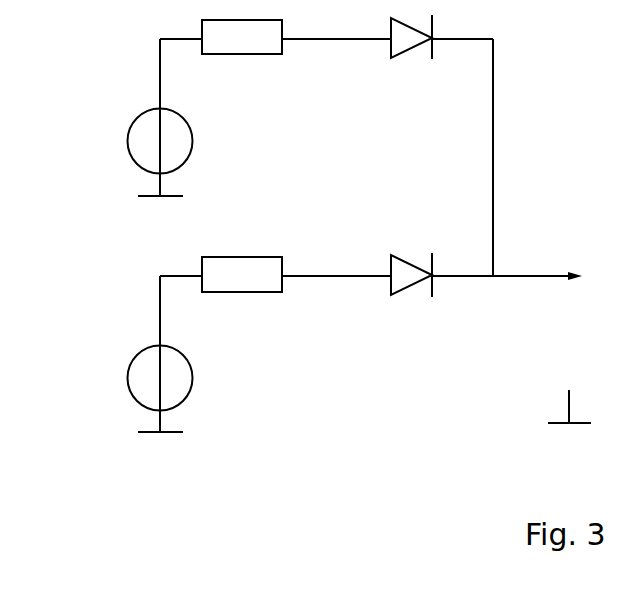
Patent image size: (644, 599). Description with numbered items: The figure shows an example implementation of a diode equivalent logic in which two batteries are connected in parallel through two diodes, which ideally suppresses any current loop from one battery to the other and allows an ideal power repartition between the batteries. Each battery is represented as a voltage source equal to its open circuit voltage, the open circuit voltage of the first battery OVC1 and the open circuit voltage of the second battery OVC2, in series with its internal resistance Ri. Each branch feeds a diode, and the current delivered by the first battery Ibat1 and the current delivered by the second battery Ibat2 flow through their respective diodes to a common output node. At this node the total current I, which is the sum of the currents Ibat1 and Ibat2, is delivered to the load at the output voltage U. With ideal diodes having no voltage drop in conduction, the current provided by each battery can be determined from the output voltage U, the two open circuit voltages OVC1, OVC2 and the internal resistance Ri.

The open circuit voltage of the first battery OVC1 is at (109, 157).
The open circuit voltage of the second battery OVC2 is at (109, 337).
The internal resistance Ri is at (221, 178).
The current delivered by the first battery Ibat1 is at (387, 51).
The current delivered by the second battery Ibat2 is at (357, 288).
The total current I is at (507, 257).
The output voltage U is at (569, 288).